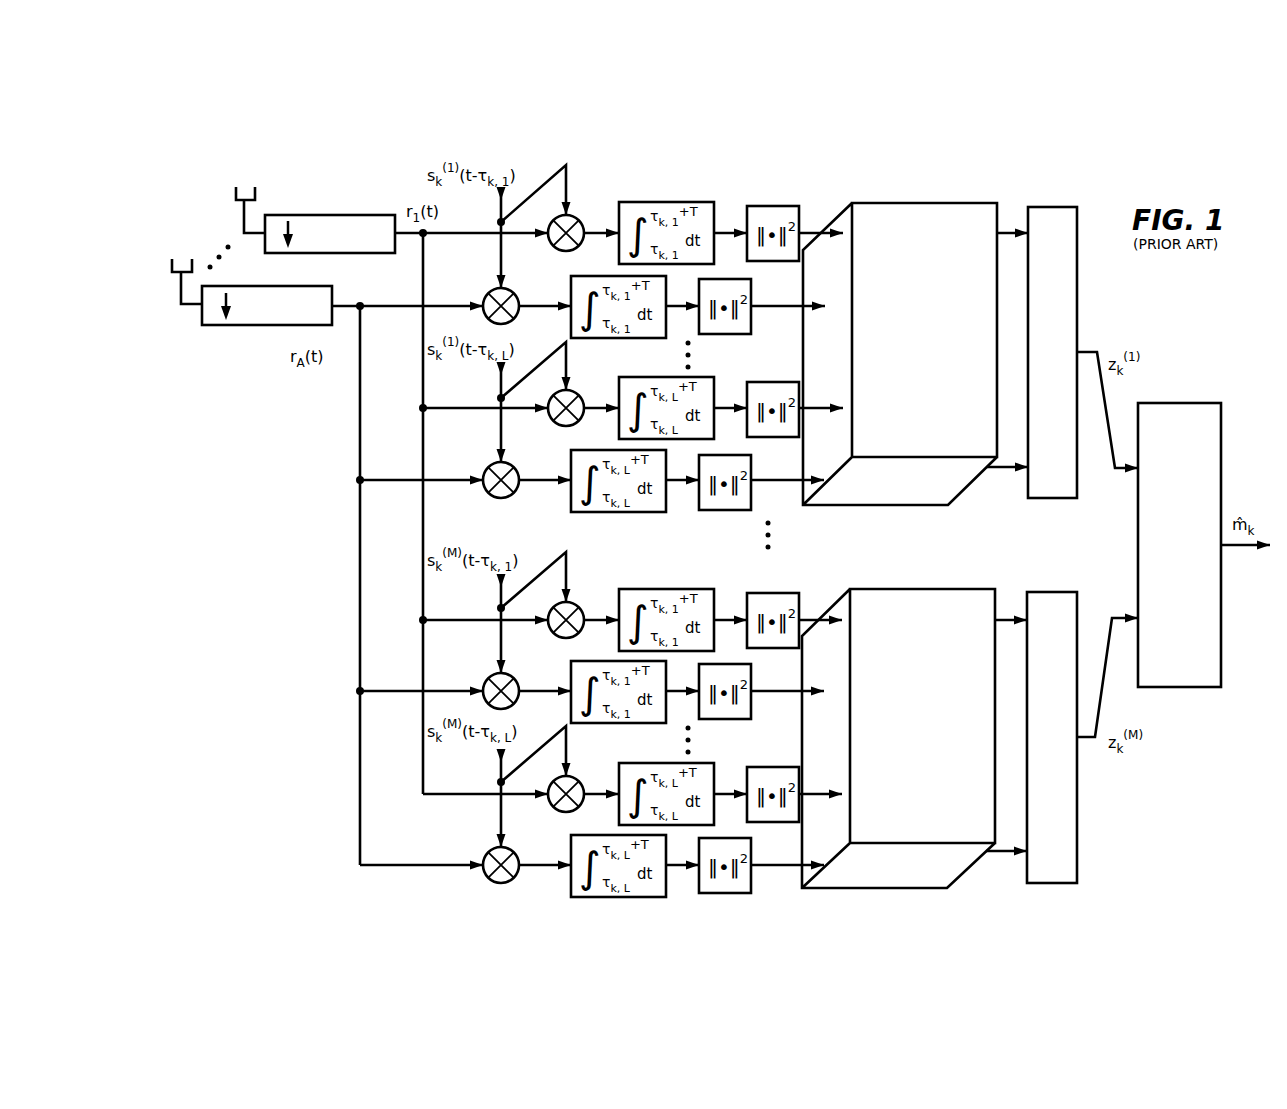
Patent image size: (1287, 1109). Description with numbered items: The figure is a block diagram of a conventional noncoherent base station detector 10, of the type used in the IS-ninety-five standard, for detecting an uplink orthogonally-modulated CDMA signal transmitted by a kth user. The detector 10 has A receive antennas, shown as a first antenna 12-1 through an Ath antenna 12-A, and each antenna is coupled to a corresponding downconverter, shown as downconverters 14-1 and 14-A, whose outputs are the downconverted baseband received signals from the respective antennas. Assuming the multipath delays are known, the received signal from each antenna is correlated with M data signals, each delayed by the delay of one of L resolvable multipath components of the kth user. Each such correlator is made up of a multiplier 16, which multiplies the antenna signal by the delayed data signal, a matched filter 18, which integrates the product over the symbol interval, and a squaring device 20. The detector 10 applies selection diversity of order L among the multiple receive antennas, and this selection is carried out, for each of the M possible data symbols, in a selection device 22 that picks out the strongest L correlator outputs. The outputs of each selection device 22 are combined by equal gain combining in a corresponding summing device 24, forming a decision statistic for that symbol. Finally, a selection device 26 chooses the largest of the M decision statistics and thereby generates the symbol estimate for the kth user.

The noncoherent base station detector 10 is at (272, 588).
The receive antenna 12-1 is at (237, 188).
The receive antenna 12-A is at (173, 259).
The downconverter 14-1 is at (301, 215).
The downconverter 14-A is at (243, 325).
The multiplier 16 is at (531, 550).
The matched filter 18 is at (640, 550).
The squaring device 20 is at (780, 552).
The selection device 22 is at (899, 526).
The summing device 24 is at (1075, 524).
The selection device 26 is at (1222, 441).